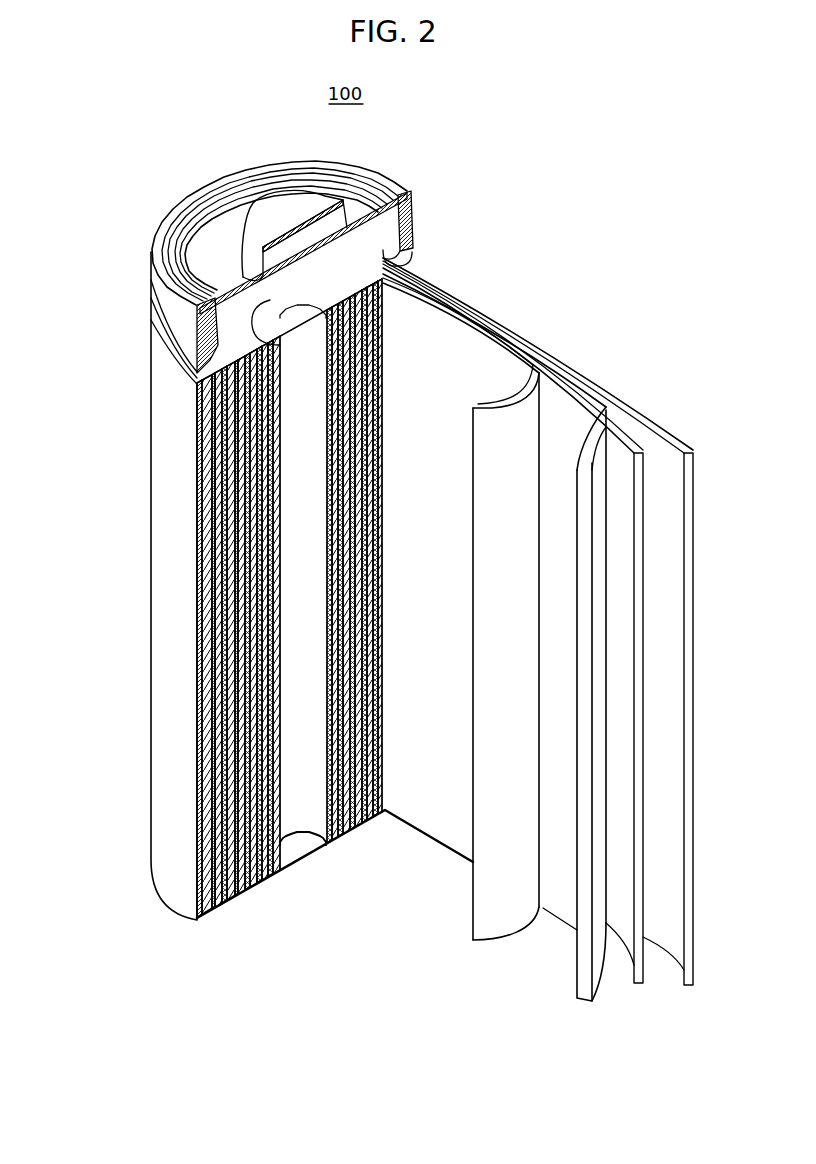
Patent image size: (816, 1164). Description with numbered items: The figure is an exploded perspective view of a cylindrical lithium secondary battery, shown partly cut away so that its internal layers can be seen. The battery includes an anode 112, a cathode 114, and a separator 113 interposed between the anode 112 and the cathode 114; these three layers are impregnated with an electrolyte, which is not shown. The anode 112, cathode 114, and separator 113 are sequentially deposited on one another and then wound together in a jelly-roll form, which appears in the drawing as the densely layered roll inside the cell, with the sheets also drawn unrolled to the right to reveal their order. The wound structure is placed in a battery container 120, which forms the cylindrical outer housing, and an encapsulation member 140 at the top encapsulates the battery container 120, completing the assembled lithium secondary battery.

The anode 112 is at (667, 420).
The separator 113 is at (508, 412).
The cathode 114 is at (590, 418).
The battery container 120 is at (151, 590).
The encapsulation member 140 is at (272, 210).